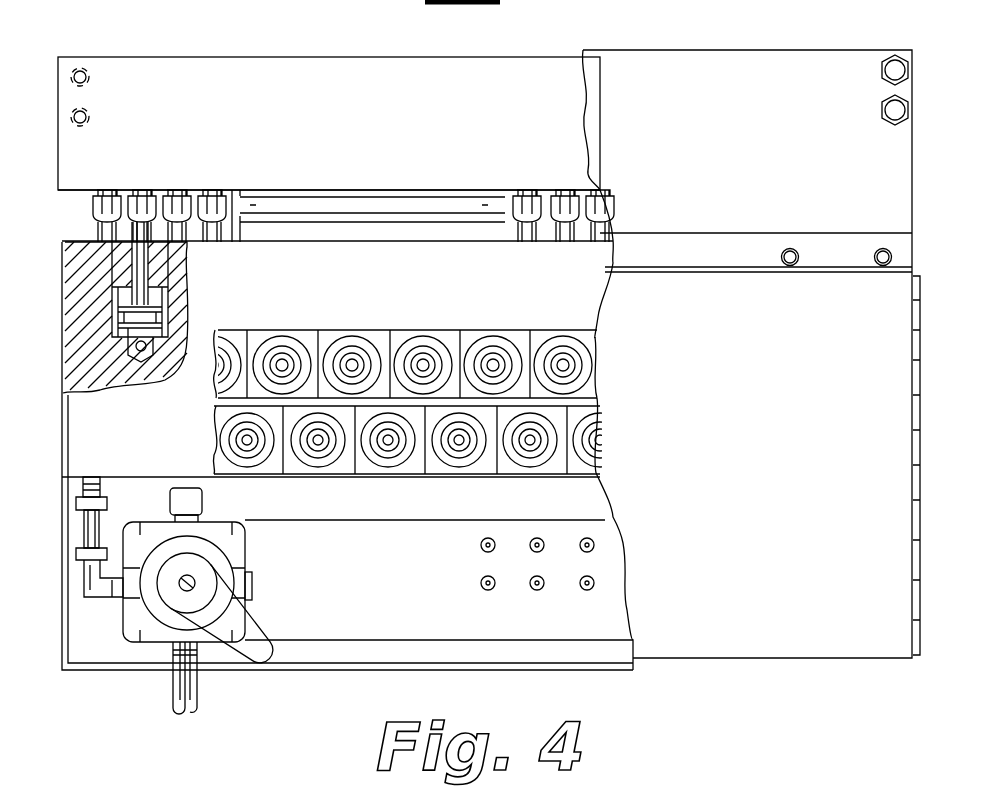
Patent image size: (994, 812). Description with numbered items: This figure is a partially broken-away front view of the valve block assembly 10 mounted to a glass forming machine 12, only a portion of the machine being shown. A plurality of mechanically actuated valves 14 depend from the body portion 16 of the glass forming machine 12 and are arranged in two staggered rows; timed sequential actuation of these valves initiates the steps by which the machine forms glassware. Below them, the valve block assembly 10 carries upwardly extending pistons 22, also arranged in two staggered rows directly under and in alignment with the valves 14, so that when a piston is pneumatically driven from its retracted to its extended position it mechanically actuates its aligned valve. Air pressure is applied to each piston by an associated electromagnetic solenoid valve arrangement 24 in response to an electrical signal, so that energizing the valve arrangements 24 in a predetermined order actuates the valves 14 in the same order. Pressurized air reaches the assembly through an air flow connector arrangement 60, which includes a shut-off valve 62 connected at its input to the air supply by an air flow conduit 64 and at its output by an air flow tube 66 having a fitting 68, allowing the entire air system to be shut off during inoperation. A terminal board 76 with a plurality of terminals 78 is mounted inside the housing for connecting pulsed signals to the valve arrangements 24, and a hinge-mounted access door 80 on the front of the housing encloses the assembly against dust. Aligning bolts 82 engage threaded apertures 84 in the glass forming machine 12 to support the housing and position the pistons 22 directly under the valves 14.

The valve block assembly 10 is at (58, 258).
The glass forming machine 12 is at (278, 57).
The mechanically actuated valves 14 is at (103, 203).
The body portion 16 is at (228, 87).
The pistons 22 is at (92, 237).
The electromagnetic solenoid valve arrangements 24 is at (357, 340).
The air flow connector arrangement 60 is at (268, 598).
The shut-off valve 62 is at (260, 637).
The air flow conduit 64 is at (200, 693).
The air flow tube 66 is at (118, 535).
The fitting 68 is at (103, 485).
The terminal board 76 is at (417, 540).
The terminals 78 is at (537, 538).
The hinge-mounted access door 80 is at (745, 620).
The aligning bolts 82 is at (885, 98).
The threaded apertures 84 is at (86, 115).